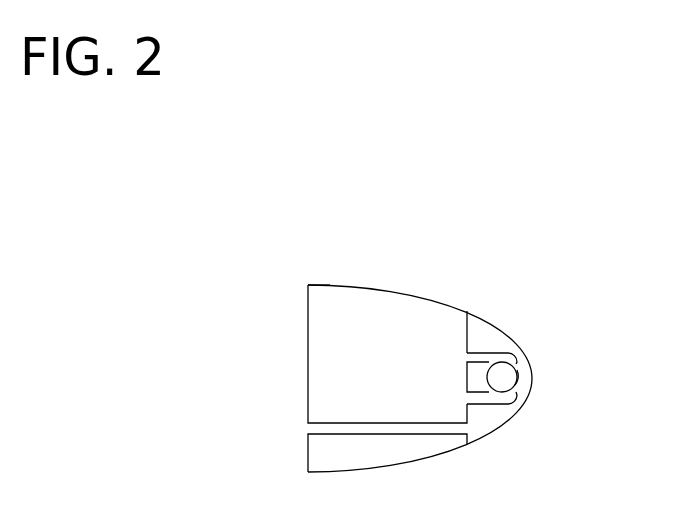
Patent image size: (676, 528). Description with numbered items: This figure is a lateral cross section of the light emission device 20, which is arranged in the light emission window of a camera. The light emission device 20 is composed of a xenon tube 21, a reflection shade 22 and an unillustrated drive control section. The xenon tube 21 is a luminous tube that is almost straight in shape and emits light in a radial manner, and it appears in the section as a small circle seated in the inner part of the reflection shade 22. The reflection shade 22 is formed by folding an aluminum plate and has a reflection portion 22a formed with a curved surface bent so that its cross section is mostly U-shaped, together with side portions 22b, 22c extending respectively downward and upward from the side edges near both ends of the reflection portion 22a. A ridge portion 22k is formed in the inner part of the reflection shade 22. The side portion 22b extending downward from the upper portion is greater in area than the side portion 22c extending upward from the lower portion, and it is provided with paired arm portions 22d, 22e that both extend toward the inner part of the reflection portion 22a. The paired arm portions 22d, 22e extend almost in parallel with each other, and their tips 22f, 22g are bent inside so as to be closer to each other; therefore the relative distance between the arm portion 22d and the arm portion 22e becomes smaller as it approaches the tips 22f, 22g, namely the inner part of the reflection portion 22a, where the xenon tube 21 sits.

The light emission device 20 is at (526, 314).
The xenon tube 21 is at (505, 384).
The reflection shade 22 is at (405, 291).
The reflection portion 22a is at (339, 287).
The side portion 22b is at (317, 367).
The side portion 22c is at (317, 455).
The arm portion 22d is at (480, 353).
The arm portion 22e is at (482, 396).
The tip 22f is at (516, 360).
The tip 22g is at (514, 404).
The ridge portion 22k is at (517, 373).